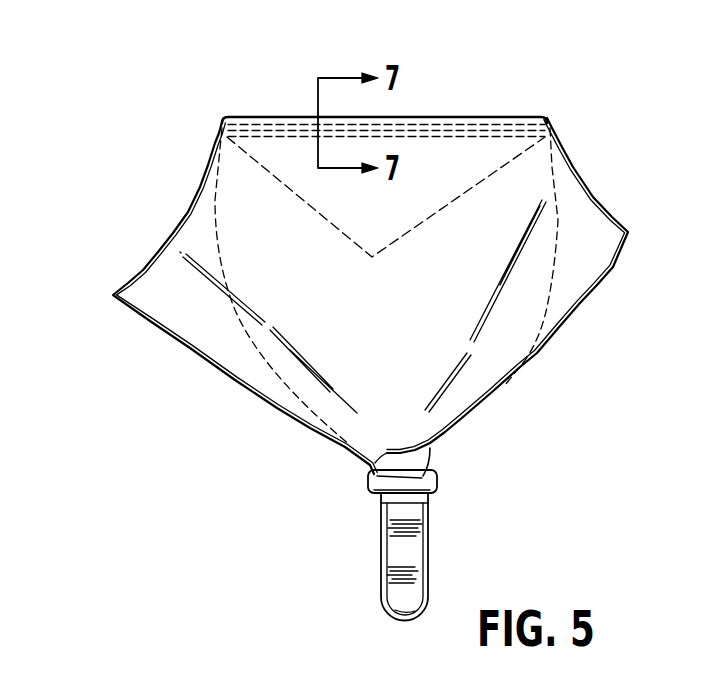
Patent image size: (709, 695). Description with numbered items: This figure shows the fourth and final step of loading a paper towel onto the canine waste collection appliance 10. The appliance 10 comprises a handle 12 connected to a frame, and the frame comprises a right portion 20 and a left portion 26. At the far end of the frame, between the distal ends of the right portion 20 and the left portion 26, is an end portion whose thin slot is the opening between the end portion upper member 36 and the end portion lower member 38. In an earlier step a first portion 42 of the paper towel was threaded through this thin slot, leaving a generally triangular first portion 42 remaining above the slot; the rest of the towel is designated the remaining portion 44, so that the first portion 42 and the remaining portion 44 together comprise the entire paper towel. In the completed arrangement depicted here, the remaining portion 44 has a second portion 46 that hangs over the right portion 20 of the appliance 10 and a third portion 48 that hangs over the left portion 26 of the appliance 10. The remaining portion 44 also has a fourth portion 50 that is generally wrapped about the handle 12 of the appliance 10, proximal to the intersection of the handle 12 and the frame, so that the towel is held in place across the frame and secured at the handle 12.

The canine waste collection appliance 10 is at (557, 222).
The handle 12 is at (407, 562).
The right portion 20 is at (550, 290).
The left portion 26 is at (233, 320).
The end portion upper member 36 is at (250, 130).
The end portion lower member 38 is at (258, 133).
The first portion 42 is at (462, 158).
The remaining portion 44 is at (385, 332).
The second portion 46 is at (582, 268).
The third portion 48 is at (143, 302).
The fourth portion 50 is at (437, 484).